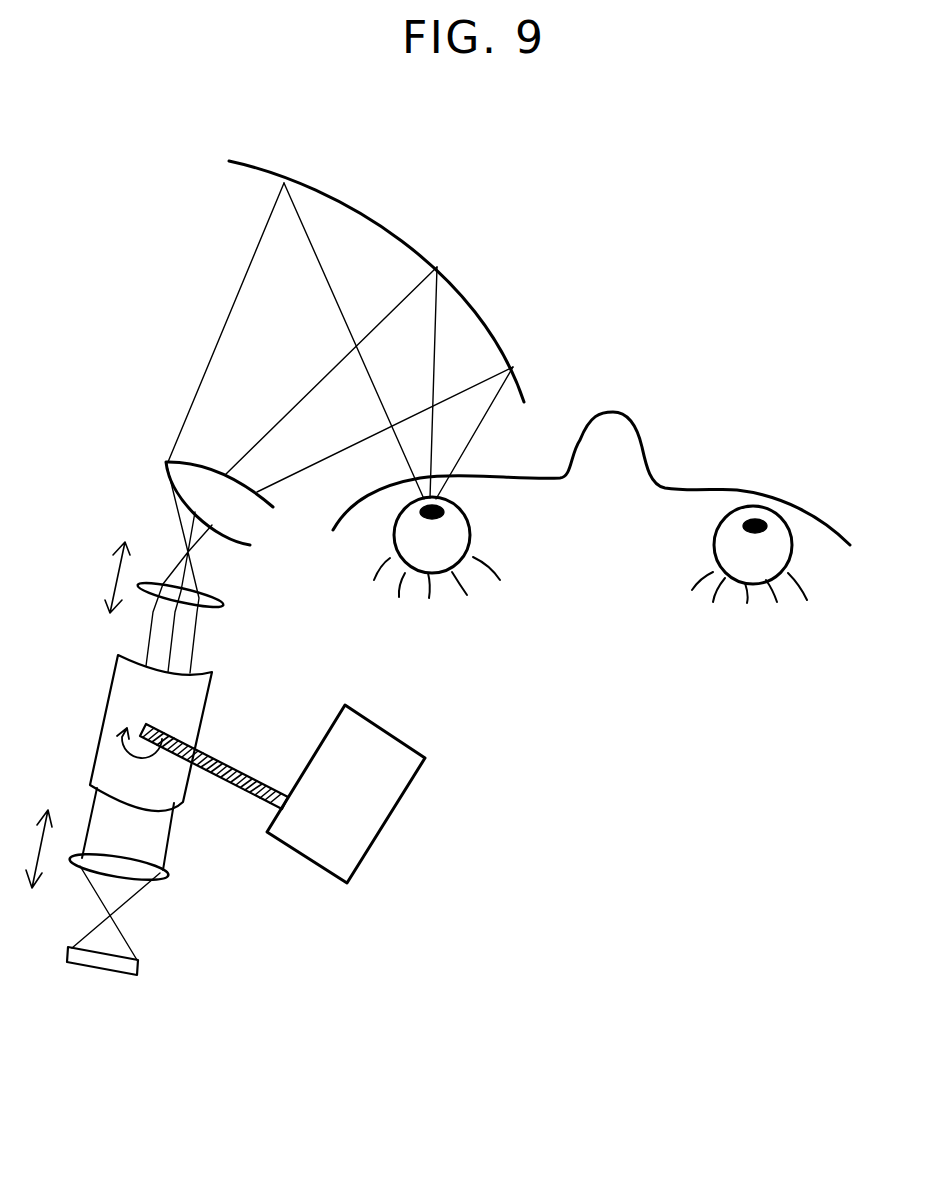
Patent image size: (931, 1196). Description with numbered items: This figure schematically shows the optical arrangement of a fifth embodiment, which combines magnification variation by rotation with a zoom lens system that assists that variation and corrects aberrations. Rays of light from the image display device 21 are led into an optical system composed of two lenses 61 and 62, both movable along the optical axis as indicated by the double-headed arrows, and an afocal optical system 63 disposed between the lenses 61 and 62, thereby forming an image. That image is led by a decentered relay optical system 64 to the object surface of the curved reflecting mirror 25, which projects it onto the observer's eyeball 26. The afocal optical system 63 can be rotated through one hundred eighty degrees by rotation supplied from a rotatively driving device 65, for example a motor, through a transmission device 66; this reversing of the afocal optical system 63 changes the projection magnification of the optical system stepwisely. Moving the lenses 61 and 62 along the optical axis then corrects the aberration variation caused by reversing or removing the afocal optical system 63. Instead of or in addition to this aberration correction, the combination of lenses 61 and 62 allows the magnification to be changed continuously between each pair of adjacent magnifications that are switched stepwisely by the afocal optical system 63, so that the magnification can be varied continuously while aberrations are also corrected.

The image display device 21 is at (137, 966).
The curved reflecting mirror 25 is at (492, 320).
The observer's eyeball 26 is at (470, 535).
The lens 61 is at (168, 875).
The lens 62 is at (222, 603).
The afocal optical system 63 is at (202, 716).
The decentered relay optical system 64 is at (165, 462).
The rotatively driving device 65 is at (388, 747).
The transmission device 66 is at (235, 792).